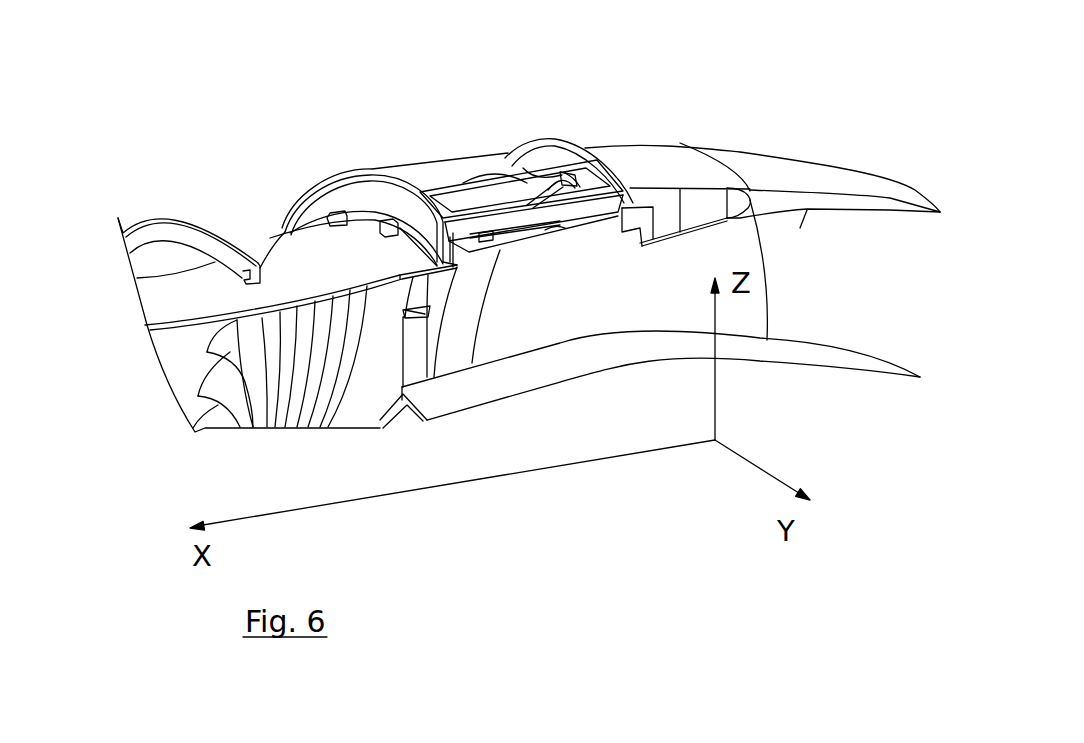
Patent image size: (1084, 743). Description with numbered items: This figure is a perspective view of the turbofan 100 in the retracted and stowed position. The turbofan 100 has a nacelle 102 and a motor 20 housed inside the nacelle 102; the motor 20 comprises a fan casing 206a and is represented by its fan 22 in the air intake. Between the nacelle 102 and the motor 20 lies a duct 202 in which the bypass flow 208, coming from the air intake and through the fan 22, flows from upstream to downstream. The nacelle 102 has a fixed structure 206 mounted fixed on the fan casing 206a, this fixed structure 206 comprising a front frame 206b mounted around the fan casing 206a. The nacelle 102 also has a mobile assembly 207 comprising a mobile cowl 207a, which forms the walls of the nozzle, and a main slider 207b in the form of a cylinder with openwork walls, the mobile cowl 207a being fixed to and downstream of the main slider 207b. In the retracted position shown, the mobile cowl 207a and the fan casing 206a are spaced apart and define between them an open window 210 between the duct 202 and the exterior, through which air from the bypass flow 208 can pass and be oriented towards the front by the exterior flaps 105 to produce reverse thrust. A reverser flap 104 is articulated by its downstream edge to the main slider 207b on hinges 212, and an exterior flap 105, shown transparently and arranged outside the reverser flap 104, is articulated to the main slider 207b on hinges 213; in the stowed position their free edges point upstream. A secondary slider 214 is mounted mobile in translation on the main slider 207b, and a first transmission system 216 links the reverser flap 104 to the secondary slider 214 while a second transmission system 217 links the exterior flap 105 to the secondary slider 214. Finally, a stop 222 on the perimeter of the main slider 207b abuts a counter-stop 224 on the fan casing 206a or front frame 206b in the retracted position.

The turbofan 100 is at (817, 89).
The nacelle 102 is at (693, 505).
The reverser flap 104 is at (625, 207).
The exterior flap 105 is at (417, 177).
The motor 20 is at (880, 363).
The fan 22 is at (255, 412).
The duct 202 is at (505, 313).
The fixed structure 206 is at (141, 543).
The fan casing 206a is at (183, 307).
The front frame 206b is at (142, 233).
The mobile assembly 207 is at (605, 518).
The mobile cowl 207a is at (827, 183).
The main slider 207b is at (457, 168).
The bypass flow 208 is at (194, 406).
The window 210 is at (463, 180).
The hinges 212 is at (585, 185).
The hinges 213 is at (572, 168).
The secondary slider 214 is at (478, 240).
The first transmission system 216 is at (516, 228).
The second transmission system 217 is at (508, 178).
The stop 222 is at (332, 217).
The counter-stop 224 is at (318, 232).